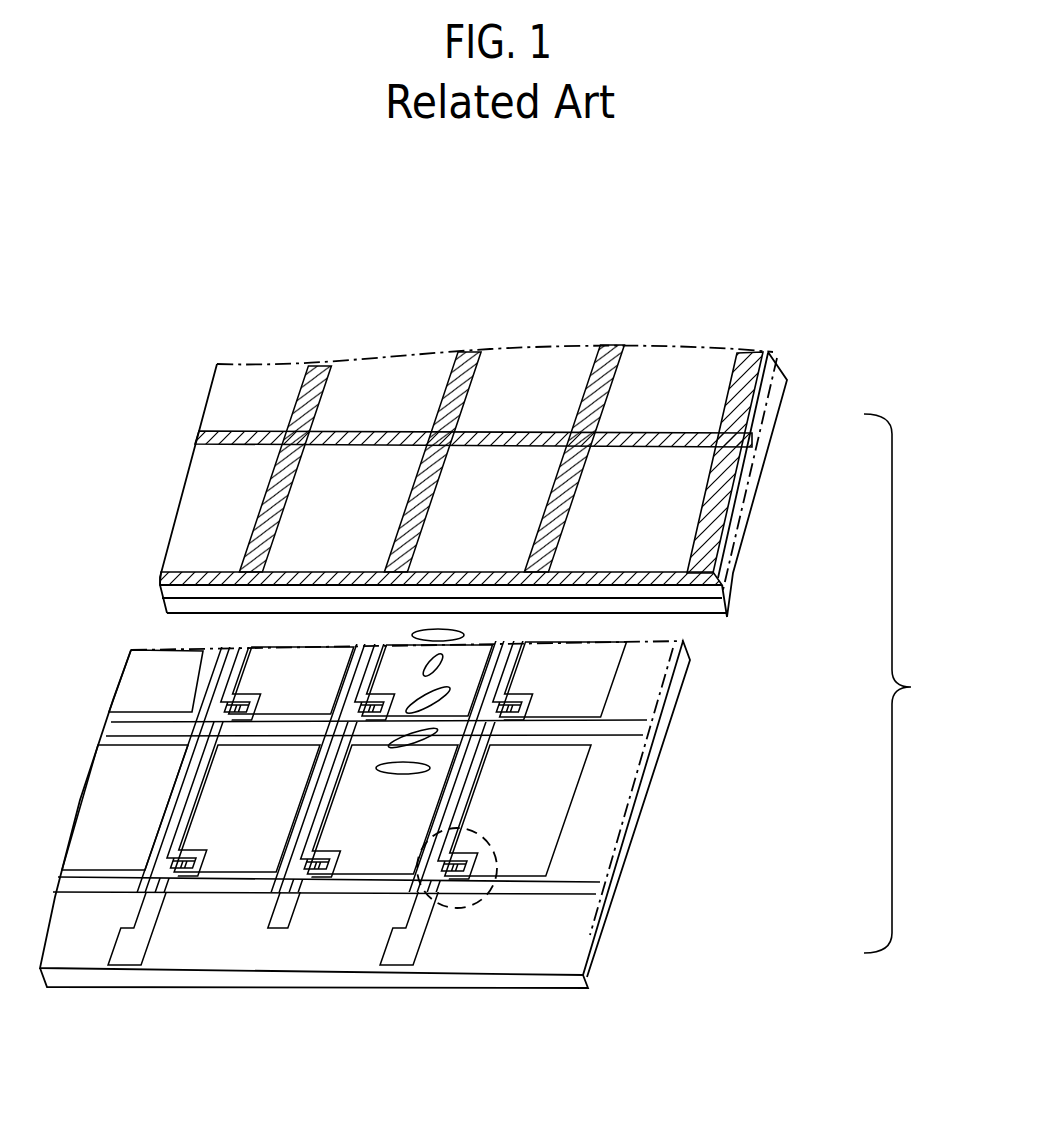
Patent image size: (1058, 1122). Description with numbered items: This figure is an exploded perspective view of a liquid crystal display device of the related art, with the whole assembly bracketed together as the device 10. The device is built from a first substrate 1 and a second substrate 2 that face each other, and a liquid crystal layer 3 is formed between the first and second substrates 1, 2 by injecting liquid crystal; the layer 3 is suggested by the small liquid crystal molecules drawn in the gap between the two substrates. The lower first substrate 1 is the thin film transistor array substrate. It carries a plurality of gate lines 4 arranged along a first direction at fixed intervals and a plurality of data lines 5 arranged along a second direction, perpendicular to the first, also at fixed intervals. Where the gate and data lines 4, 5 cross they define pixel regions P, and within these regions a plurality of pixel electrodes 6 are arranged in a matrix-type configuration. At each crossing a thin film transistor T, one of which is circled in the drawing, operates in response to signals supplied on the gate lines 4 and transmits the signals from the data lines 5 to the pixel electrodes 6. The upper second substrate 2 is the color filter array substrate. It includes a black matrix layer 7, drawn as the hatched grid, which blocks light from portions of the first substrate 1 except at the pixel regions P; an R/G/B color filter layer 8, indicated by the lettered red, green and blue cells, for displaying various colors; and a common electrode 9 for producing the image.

The first substrate 1 is at (548, 985).
The second substrate 2 is at (707, 595).
The liquid crystal layer 3 is at (453, 690).
The gate lines 4 is at (560, 890).
The data lines 5 is at (410, 913).
The pixel electrodes 6 is at (568, 823).
The black matrix layer 7 is at (747, 440).
The R/G/B color filter layer 8 is at (237, 488).
The common electrode 9 is at (707, 610).
The liquid crystal display panel 10 is at (912, 683).
The pixel regions P is at (608, 778).
The thin film transistors T is at (457, 908).